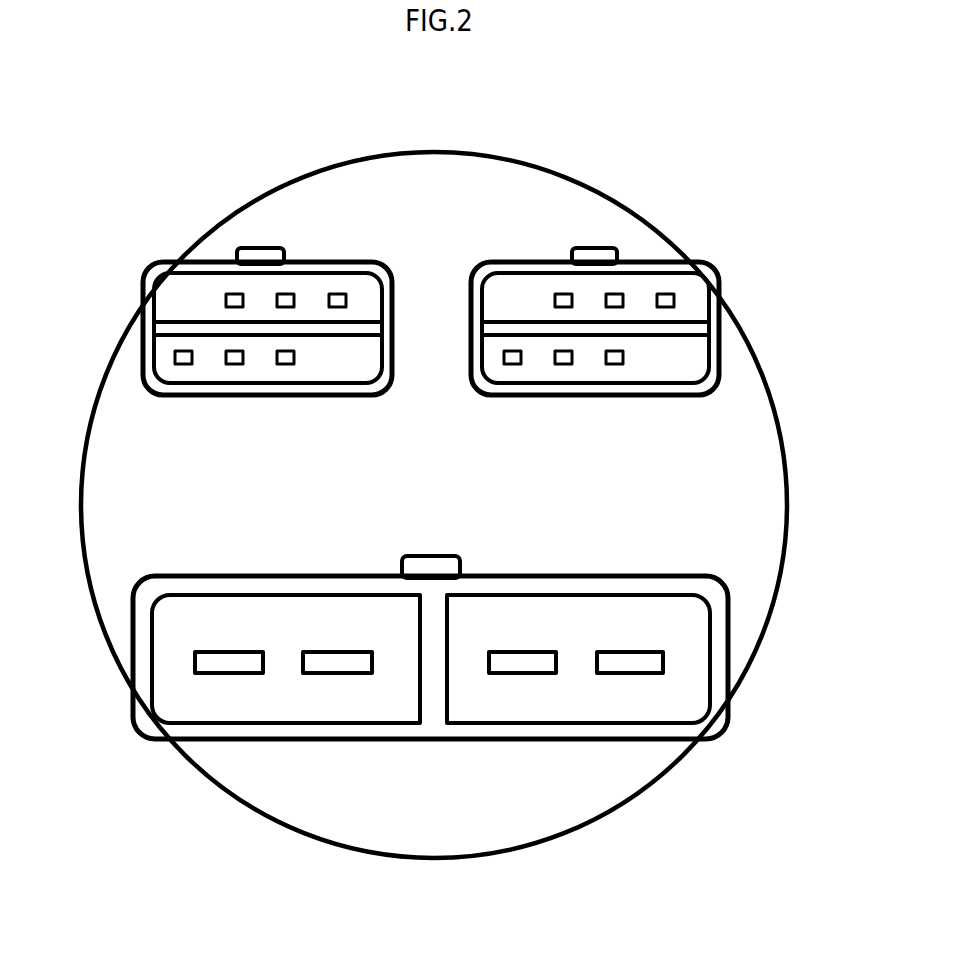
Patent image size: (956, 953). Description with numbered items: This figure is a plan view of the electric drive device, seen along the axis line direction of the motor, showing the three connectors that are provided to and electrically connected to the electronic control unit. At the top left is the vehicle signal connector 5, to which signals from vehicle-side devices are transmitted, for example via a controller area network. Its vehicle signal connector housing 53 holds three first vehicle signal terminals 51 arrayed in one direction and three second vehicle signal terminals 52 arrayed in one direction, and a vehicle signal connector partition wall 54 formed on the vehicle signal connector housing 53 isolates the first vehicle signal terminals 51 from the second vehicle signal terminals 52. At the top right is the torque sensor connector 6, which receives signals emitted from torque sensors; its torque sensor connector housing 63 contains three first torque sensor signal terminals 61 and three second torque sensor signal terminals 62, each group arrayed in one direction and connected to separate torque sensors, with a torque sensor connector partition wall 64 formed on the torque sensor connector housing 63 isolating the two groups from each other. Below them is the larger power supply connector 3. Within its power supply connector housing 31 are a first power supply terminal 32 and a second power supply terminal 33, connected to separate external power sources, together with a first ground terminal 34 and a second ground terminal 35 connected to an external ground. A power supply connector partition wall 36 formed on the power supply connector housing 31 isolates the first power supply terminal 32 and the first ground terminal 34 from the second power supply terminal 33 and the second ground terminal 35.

The power supply connector 3 is at (442, 743).
The power supply connector housing 31 is at (138, 712).
The first power supply terminal 32 is at (226, 665).
The second power supply terminal 33 is at (628, 665).
The first ground terminal 34 is at (340, 665).
The second ground terminal 35 is at (525, 665).
The power supply connector partition wall 36 is at (438, 626).
The vehicle signal connector 5 is at (210, 251).
The first vehicle signal terminal 51 is at (234, 296).
The second vehicle signal terminal 52 is at (183, 357).
The vehicle signal connector housing 53 is at (148, 296).
The vehicle signal connector partition wall 54 is at (311, 330).
The torque sensor connector 6 is at (654, 251).
The first torque sensor signal terminal 61 is at (663, 296).
The second torque sensor signal terminal 62 is at (616, 357).
The torque sensor connector housing 63 is at (716, 283).
The torque sensor connector partition wall 64 is at (537, 331).